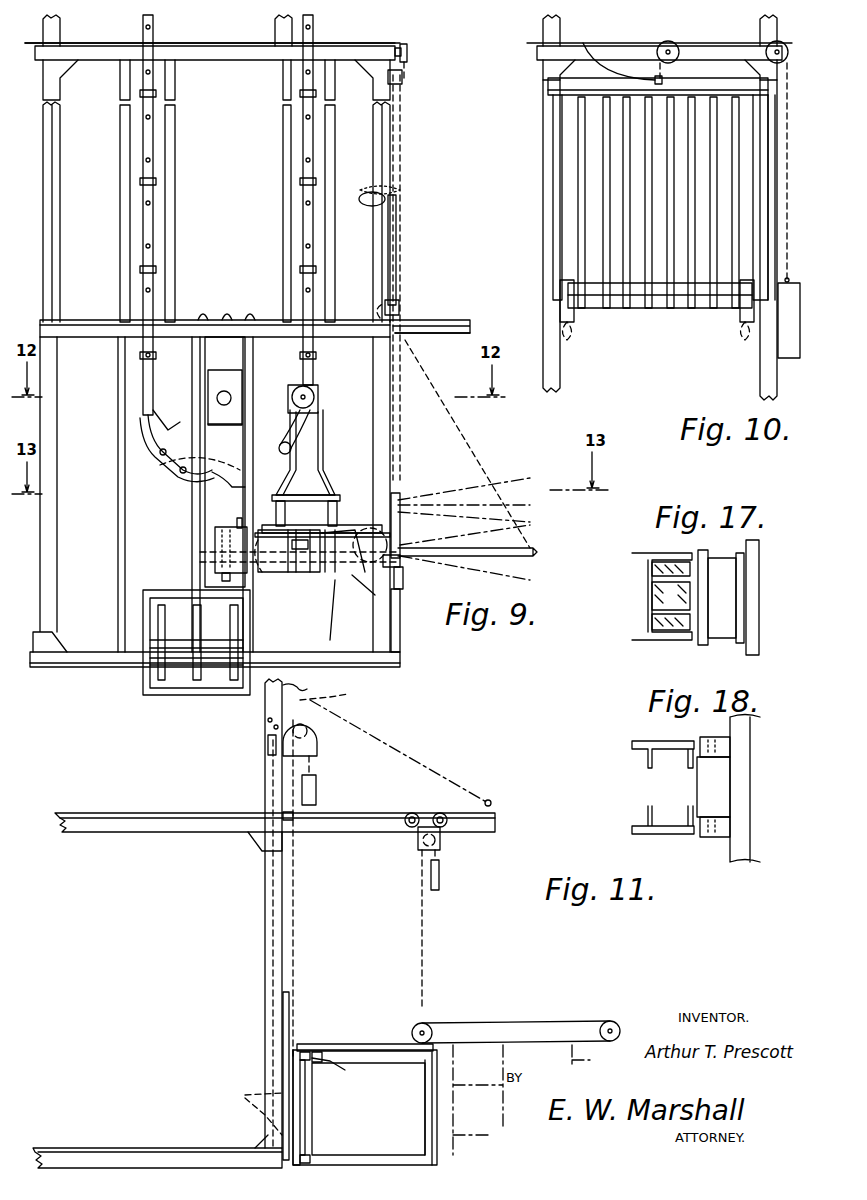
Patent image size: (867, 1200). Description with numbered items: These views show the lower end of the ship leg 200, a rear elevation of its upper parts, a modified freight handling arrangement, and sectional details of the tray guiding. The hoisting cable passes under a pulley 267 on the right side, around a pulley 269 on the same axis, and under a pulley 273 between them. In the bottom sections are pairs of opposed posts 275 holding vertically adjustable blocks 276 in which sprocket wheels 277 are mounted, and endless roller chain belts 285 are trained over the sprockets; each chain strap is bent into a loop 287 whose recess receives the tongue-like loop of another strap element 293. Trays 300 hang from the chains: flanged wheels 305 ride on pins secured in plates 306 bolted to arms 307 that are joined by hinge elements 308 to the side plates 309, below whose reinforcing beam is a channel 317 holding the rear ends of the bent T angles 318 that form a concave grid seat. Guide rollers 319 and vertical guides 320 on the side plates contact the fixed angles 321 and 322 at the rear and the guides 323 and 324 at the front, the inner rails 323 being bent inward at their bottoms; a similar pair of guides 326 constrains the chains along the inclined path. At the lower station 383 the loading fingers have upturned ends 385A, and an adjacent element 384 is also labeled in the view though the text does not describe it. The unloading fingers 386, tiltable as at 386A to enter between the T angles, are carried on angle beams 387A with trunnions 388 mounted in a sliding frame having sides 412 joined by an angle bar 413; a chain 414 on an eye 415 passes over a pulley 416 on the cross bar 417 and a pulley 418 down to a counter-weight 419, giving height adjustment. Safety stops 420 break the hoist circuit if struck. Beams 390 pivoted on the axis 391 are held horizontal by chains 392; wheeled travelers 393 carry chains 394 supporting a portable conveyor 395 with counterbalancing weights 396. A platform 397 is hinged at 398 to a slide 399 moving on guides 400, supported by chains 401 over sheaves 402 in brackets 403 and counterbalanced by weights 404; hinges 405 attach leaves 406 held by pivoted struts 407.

In FIG. 9, the ship leg 200 is at (85, 660).
In FIG. 9, the pulley 267 is at (232, 662).
In FIG. 9, the pulley 269 is at (157, 658).
In FIG. 9, the pulley 273 is at (195, 660).
In FIG. 9, the opposed posts 275 is at (195, 487).
In FIG. 9, the vertically adjustable blocks 276 is at (220, 385).
In FIG. 9, the sprocket wheels 277 is at (142, 415).
In FIG. 9, the endless roller chain belts 285 is at (150, 222).
In FIG. 17, the loop 287 is at (650, 622).
In FIG. 17, the strap element 293 is at (648, 598).
In FIG. 9, the trays 300 is at (332, 580).
In FIG. 18, the trays 300 is at (740, 808).
In FIG. 17, the flanged wheels 305 is at (722, 632).
In FIG. 9, the plates 306 is at (315, 390).
In FIG. 17, the plates 306 is at (752, 555).
In FIG. 9, the arms 307 is at (300, 460).
In FIG. 9, the hinge elements 308 is at (400, 515).
In FIG. 9, the side plates 309 is at (402, 560).
In FIG. 9, the channel 317 is at (225, 580).
In FIG. 9, the T angles 318 is at (340, 612).
In FIG. 9, the guide rollers 319 is at (258, 575).
In FIG. 18, the guide rollers 319 is at (720, 790).
In FIG. 9, the vertical guides 320 is at (310, 572).
In FIG. 9, the fixed angle 321 is at (330, 137).
In FIG. 9, the fixed angle 322 is at (283, 158).
In FIG. 9, the inner angle rails 323 is at (175, 133).
In FIG. 9, the guides 324 is at (71, 377).
In FIG. 17, the guides 326 is at (648, 565).
In FIG. 18, the guides 326 is at (645, 760).
In FIG. 9, the station 383 is at (467, 444).
In FIG. 9, the rod 384 is at (195, 545).
In FIG. 9, the turned-up ends 385A is at (237, 523).
In FIG. 9, the unloading fingers 386 is at (405, 215).
In FIG. 10, the unloading fingers 386 is at (650, 150).
In FIG. 9, the tilted position 386A is at (325, 425).
In FIG. 10, the angle beams 387A is at (638, 302).
In FIG. 9, the trunnions 388 is at (399, 305).
In FIG. 10, the trunnions 388 is at (575, 328).
In FIG. 9, the beams 390 is at (442, 336).
In FIG. 11, the beams 390 is at (362, 814).
In FIG. 9, the axis 391 is at (412, 322).
In FIG. 11, the axis 391 is at (272, 813).
In FIG. 11, the chains 392 is at (405, 752).
In FIG. 11, the wheeled travelers 393 is at (430, 812).
In FIG. 11, the chains 394 is at (430, 924).
In FIG. 11, the portable conveyor 395 is at (490, 1023).
In FIG. 11, the counterbalancing weights 396 is at (441, 868).
In FIG. 9, the platform 397 is at (505, 556).
In FIG. 17, the platform 397 is at (648, 578).
In FIG. 11, the platform 397 is at (366, 1044).
In FIG. 9, the hinge 398 is at (403, 587).
In FIG. 11, the hinge 398 is at (300, 1050).
In FIG. 9, the slide 399 is at (400, 618).
In FIG. 11, the slide 399 is at (241, 1112).
In FIG. 9, the guides 400 is at (400, 493).
In FIG. 11, the guides 400 is at (292, 995).
In FIG. 11, the chains 401 is at (298, 882).
In FIG. 11, the sheaves 402 is at (341, 694).
In FIG. 11, the brackets 403 is at (268, 728).
In FIG. 11, the weights 404 is at (318, 778).
In FIG. 11, the hinges 405 is at (345, 1070).
In FIG. 11, the leaves 406 is at (368, 1109).
In FIG. 11, the pivoted struts 407 is at (430, 1113).
In FIG. 9, the frame sides 412 is at (403, 136).
In FIG. 10, the frame sides 412 is at (765, 120).
In FIG. 10, the angle bar 413 is at (683, 84).
In FIG. 9, the chain or cable 414 is at (410, 70).
In FIG. 10, the chain or cable 414 is at (785, 165).
In FIG. 10, the eye 415 is at (611, 50).
In FIG. 9, the pulley 416 is at (410, 52).
In FIG. 10, the pulley 416 is at (657, 45).
In FIG. 9, the cross bar 417 is at (386, 52).
In FIG. 10, the cross bar 417 is at (735, 50).
In FIG. 10, the pulley 418 is at (782, 43).
In FIG. 10, the counter-weight 419 is at (786, 345).
In FIG. 9, the safety stops 420 is at (388, 197).